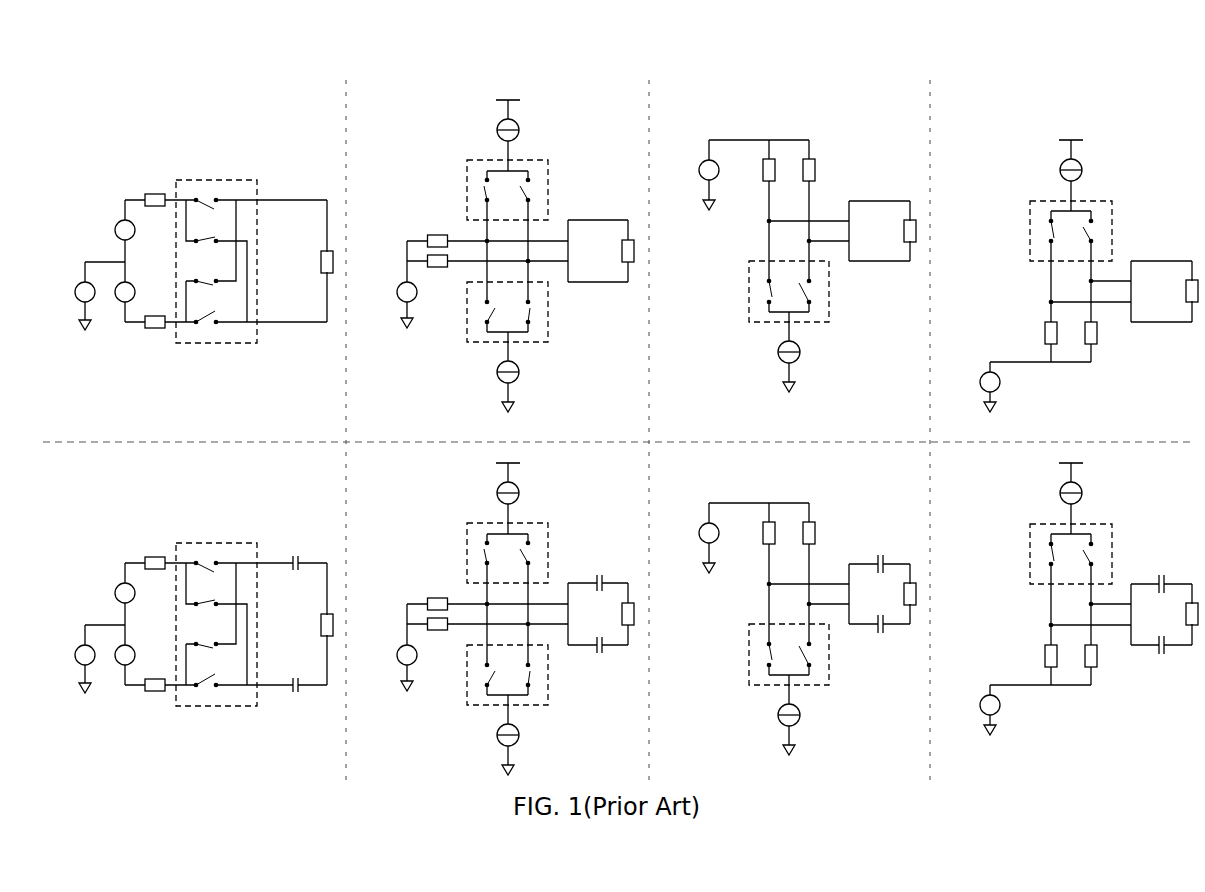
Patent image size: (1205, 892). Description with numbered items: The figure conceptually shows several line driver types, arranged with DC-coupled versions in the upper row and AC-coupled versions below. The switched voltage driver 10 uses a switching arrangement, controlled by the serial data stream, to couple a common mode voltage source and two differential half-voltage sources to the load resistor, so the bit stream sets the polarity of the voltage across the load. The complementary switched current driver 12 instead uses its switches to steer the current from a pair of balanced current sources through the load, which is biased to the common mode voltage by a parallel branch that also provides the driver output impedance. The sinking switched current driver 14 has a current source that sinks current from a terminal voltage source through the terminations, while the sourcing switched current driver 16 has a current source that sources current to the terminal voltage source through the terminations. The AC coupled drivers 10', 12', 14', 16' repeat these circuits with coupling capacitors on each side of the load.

The switched voltage driver 10 is at (186, 234).
The complementary switched current driver 12 is at (496, 256).
The sinking switched current driver 14 is at (789, 251).
The sourcing switched current driver 16 is at (1071, 260).
The AC coupled switched voltage driver 10' is at (186, 592).
The AC coupled complementary switched current driver 12' is at (496, 619).
The AC coupled sinking switched current driver 14' is at (789, 609).
The AC coupled sourcing switched current driver 16' is at (1070, 599).